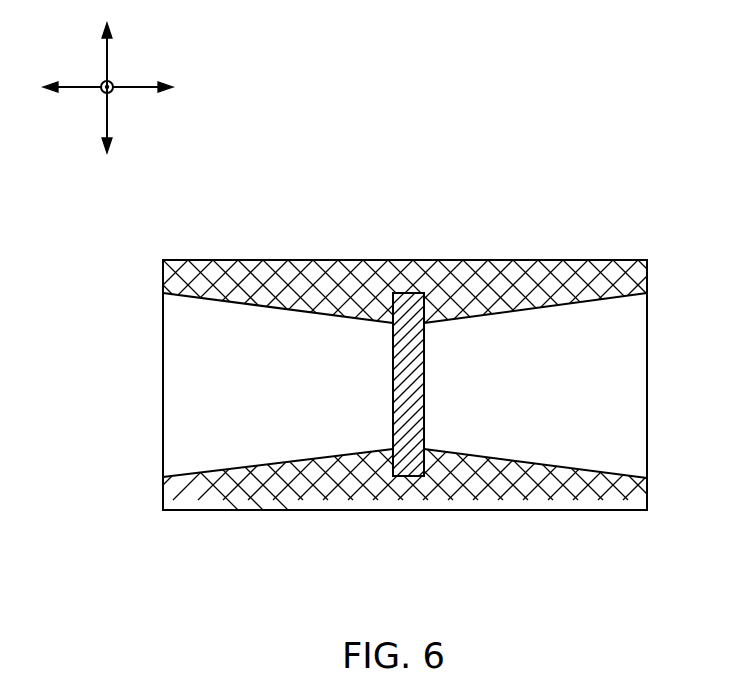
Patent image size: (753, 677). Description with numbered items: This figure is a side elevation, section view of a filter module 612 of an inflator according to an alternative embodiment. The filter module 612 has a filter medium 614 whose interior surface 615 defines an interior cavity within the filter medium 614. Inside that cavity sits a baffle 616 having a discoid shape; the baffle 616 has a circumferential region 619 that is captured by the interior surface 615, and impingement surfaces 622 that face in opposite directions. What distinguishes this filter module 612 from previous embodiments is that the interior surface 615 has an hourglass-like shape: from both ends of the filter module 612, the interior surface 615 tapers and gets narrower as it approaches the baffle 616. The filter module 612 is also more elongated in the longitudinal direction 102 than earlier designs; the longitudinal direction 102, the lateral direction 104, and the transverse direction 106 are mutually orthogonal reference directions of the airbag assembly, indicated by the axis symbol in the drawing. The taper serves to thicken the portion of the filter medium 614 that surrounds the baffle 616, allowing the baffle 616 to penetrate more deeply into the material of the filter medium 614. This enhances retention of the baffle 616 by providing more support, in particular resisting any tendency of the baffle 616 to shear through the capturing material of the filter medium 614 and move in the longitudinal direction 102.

The longitudinal direction 102 is at (148, 83).
The lateral direction 104 is at (110, 92).
The transverse direction 106 is at (110, 70).
The filter module 612 is at (546, 165).
The filter medium 614 is at (376, 355).
The interior surface 615 is at (209, 300).
The baffle 616 is at (425, 426).
The circumferential region 619 is at (417, 480).
The impingement surfaces 622 is at (392, 402).